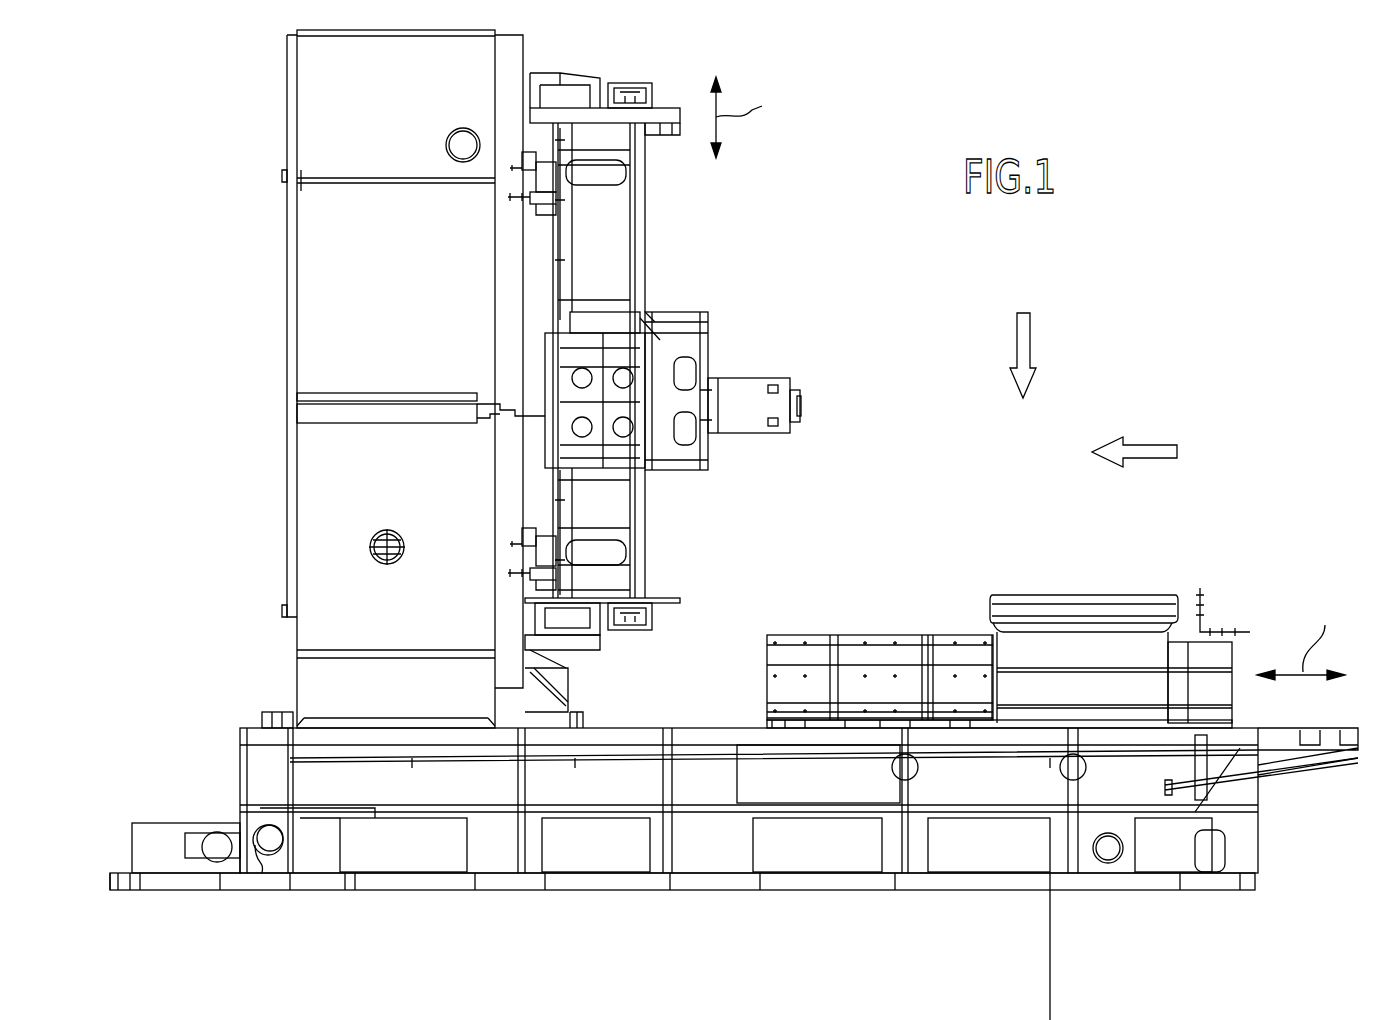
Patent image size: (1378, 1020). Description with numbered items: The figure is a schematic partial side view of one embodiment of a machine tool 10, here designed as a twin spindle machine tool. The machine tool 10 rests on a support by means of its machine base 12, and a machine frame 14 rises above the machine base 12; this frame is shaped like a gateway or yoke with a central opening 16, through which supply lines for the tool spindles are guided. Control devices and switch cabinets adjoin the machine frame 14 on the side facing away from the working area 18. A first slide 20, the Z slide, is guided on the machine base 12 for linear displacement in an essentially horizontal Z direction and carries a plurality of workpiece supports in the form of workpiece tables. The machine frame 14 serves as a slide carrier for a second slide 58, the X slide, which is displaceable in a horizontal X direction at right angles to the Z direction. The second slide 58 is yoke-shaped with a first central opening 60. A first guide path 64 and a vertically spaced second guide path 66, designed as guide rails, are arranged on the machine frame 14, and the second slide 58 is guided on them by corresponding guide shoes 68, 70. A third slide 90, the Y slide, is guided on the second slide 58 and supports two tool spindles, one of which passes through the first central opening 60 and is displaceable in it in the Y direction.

The machine tool 10 is at (745, 206).
The machine base 12 is at (706, 848).
The machine frame 14 is at (328, 87).
The central opening 16 is at (287, 357).
The working area 18 is at (908, 536).
The first slide 20 is at (1101, 607).
The second slide 58 is at (655, 80).
The first central opening 60 is at (646, 232).
The first guide path 64 is at (534, 200).
The second guide path 66 is at (522, 566).
The guide shoe 68 is at (533, 176).
The guide shoe 70 is at (532, 540).
The third slide 90 is at (716, 312).